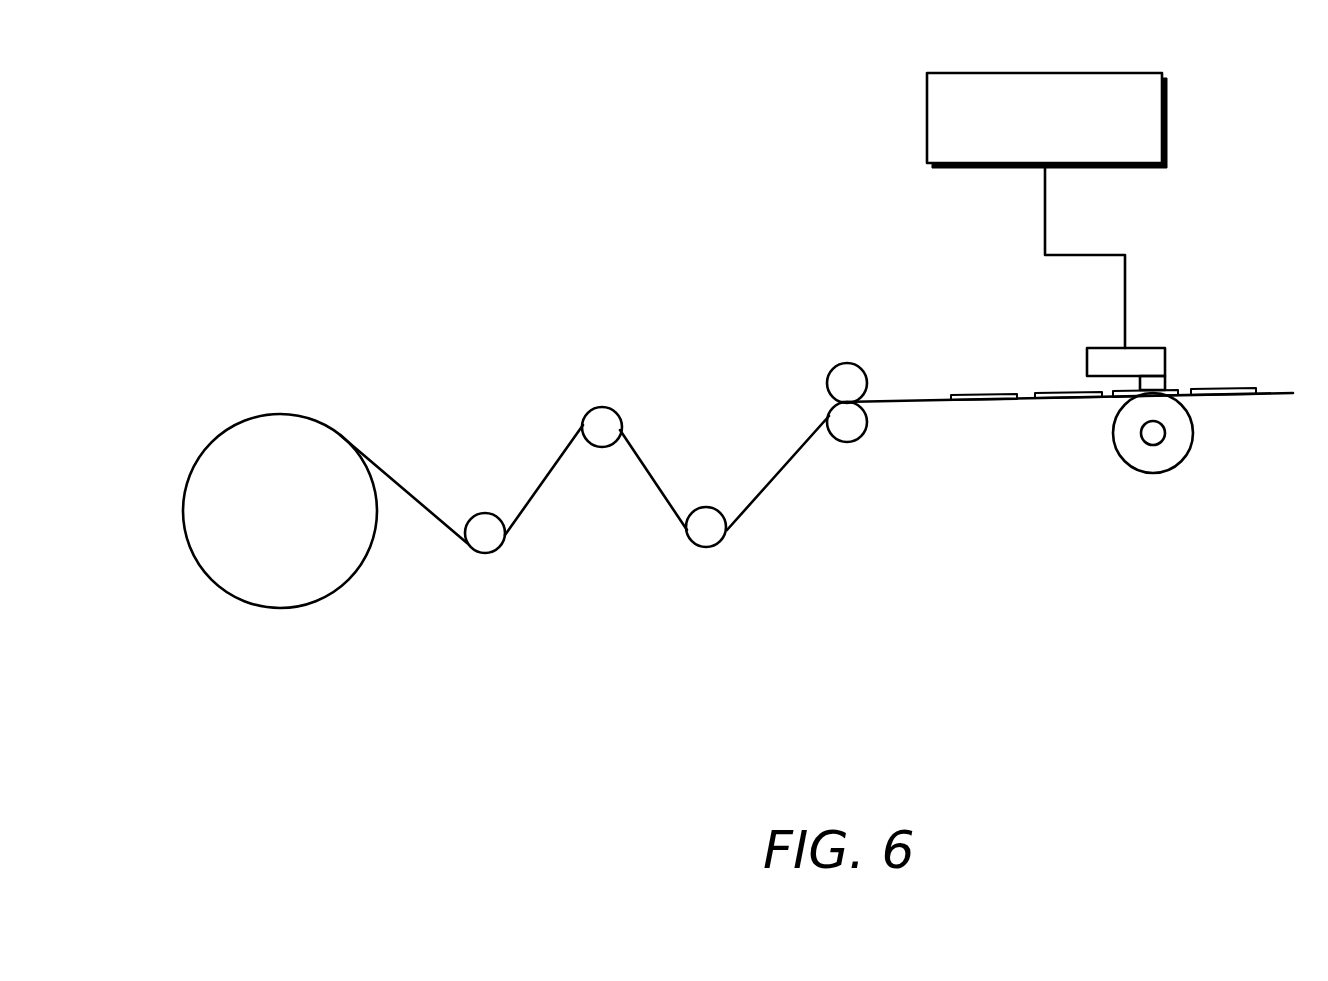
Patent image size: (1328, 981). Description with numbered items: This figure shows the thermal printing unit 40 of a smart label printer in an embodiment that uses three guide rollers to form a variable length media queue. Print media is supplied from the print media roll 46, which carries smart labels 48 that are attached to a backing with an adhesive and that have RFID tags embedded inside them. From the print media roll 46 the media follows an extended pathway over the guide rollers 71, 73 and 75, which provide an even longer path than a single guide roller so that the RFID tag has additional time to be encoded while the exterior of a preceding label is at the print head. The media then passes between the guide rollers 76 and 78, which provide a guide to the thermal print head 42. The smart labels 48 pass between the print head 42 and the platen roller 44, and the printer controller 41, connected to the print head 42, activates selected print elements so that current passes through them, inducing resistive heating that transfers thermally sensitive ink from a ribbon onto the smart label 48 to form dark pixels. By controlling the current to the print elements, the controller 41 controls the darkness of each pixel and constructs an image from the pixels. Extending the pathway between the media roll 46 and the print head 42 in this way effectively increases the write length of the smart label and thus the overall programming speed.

The thermal printing unit 40 is at (421, 125).
The printer controller 41 is at (1168, 113).
The thermal print head 42 is at (1167, 380).
The platen roller 44 is at (1178, 463).
The print media roll 46 is at (350, 577).
The smart labels 48 is at (985, 393).
The guide roller 71 is at (484, 552).
The guide roller 73 is at (602, 407).
The guide roller 75 is at (706, 548).
The guide roller 76 is at (846, 364).
The guide roller 78 is at (846, 442).